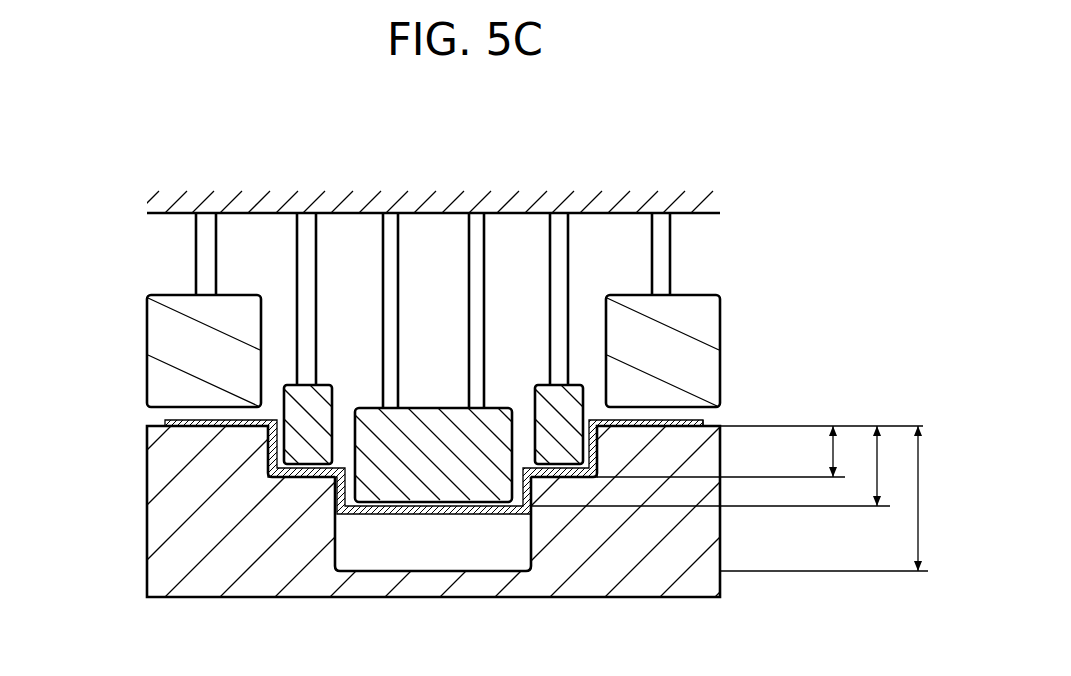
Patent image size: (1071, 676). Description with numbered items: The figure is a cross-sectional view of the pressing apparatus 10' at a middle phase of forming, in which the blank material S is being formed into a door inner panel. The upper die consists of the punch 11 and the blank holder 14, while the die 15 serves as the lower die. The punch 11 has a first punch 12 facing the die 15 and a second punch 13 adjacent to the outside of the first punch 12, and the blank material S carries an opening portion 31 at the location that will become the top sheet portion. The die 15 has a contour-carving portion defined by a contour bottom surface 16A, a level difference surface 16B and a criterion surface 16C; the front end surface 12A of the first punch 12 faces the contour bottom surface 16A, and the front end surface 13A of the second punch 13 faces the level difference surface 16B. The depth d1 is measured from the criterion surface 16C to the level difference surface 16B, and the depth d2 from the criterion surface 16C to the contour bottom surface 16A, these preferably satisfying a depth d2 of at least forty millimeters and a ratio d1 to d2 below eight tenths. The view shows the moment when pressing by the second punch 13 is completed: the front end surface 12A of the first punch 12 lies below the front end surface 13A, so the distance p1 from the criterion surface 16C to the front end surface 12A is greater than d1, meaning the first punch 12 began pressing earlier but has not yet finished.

The pressing apparatus 10' is at (804, 93).
The punch 11 is at (590, 129).
The first punch 12 is at (437, 408).
The front end surface 12A is at (501, 408).
The second punch 13 is at (330, 385).
The front end surface 13A is at (274, 428).
The blank holder 14 is at (240, 295).
The die 15 is at (720, 543).
The contour bottom surface 16A is at (400, 570).
The level difference surface 16B is at (303, 478).
The criterion surface 16C is at (713, 424).
The opening portion 31 is at (436, 516).
The blank material S is at (185, 418).
The depth d1 is at (845, 451).
The distance p1 is at (889, 466).
The depth d2 is at (930, 498).